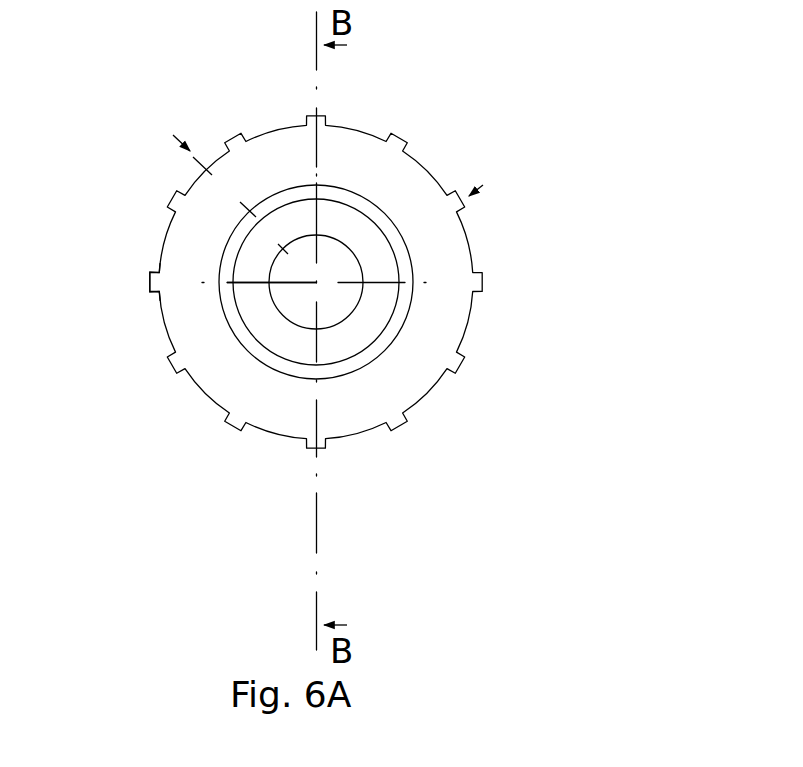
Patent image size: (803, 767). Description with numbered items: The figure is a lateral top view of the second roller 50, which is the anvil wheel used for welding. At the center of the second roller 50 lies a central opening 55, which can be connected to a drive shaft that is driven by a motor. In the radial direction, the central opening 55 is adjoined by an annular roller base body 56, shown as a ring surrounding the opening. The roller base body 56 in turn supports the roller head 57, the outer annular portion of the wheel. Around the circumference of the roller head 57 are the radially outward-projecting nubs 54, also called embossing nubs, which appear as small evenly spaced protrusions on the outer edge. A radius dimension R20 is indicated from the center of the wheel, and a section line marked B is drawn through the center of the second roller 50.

The cap 50 is at (460, 86).
The tooth / protrusion 54 is at (147, 285).
The central opening 55 is at (338, 268).
The inner annular wall 56 is at (382, 298).
The outer annular body 57 is at (425, 362).
The radius R20 is at (312, 280).